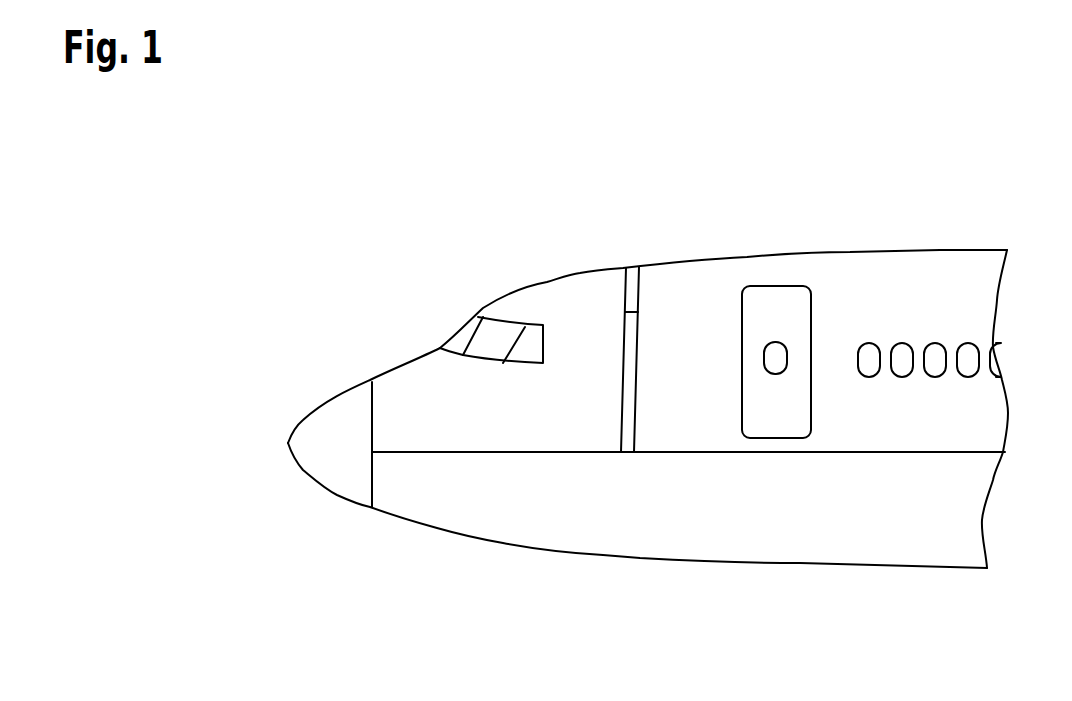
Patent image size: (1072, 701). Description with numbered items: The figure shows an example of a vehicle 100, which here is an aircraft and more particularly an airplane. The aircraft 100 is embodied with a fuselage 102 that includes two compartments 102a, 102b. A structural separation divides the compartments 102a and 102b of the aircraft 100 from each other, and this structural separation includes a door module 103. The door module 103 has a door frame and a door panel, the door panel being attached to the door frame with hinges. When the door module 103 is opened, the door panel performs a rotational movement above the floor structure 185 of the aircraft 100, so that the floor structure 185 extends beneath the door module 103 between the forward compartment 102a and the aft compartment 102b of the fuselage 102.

The vehicle 100 is at (360, 268).
The fuselage 102 is at (865, 247).
The compartment 102a is at (505, 418).
The compartment 102b is at (688, 415).
The door module 103 is at (623, 343).
The floor structure 185 is at (648, 452).